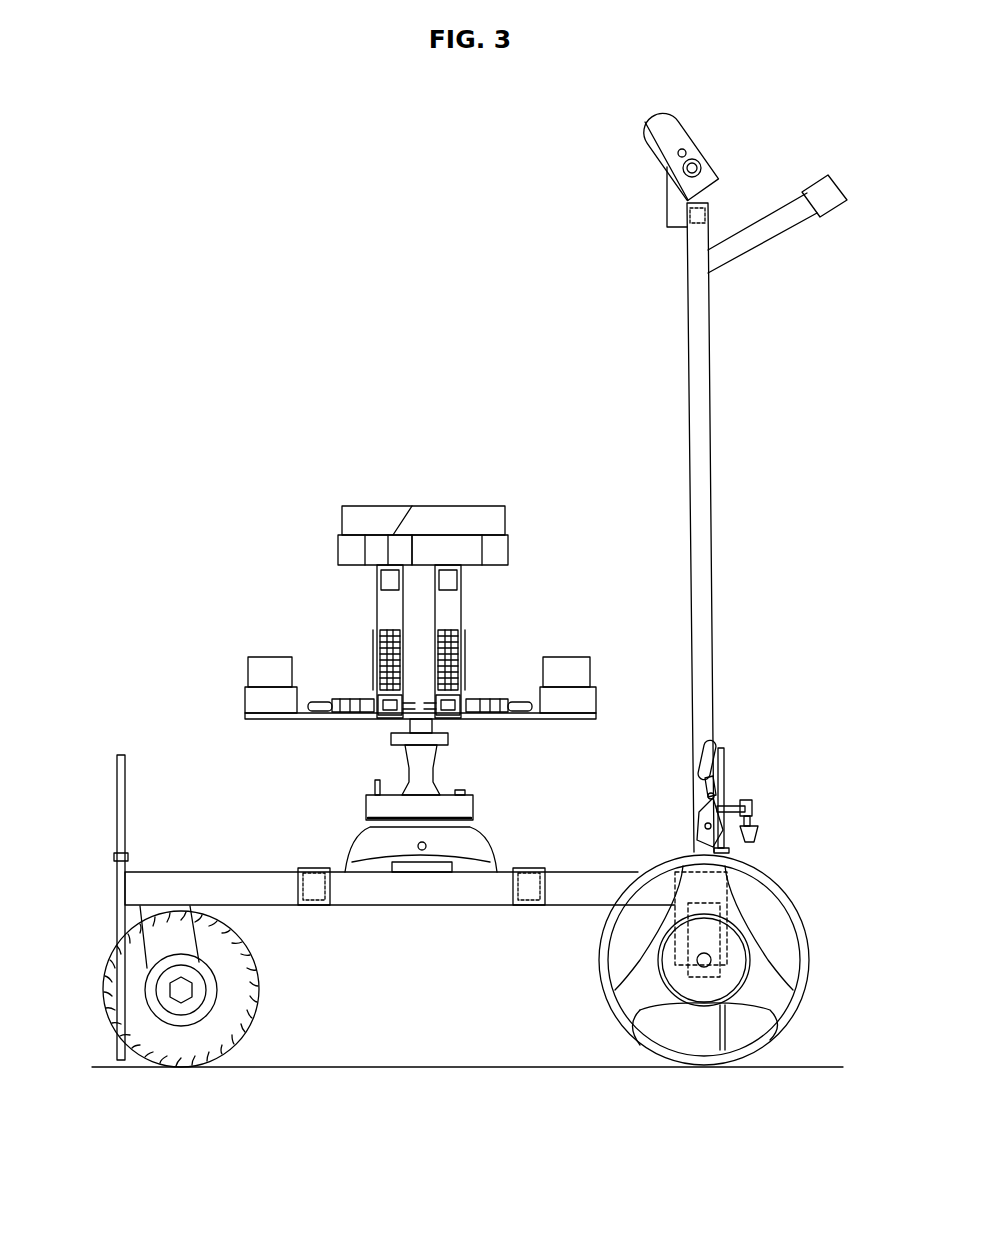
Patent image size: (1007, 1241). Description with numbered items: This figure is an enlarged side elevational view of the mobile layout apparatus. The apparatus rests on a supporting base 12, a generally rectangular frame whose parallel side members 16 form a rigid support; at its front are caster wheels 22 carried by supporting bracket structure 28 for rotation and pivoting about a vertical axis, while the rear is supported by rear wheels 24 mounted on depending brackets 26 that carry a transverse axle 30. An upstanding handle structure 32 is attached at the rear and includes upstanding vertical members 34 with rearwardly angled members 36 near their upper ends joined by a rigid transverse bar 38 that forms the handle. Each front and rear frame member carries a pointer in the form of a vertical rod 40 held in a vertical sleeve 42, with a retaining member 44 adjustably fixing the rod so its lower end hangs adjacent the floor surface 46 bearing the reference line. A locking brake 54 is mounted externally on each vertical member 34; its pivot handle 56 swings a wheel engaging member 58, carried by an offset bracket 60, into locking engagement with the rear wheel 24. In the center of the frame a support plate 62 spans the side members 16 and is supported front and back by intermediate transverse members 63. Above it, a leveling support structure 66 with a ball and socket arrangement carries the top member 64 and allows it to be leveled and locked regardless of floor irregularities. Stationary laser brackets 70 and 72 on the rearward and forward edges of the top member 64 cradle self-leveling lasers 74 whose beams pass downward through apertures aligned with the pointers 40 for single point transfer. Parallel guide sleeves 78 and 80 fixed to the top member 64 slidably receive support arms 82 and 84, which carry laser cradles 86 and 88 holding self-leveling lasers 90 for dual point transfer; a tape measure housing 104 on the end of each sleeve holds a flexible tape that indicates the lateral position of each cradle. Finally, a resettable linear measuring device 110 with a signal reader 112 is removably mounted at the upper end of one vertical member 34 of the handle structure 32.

The supporting base 12 is at (400, 898).
The side members 16 is at (460, 908).
The caster wheels 22 is at (213, 986).
The rear wheels 24 is at (689, 960).
The depending brackets 26 is at (695, 925).
The supporting bracket structure 28 is at (172, 945).
The axle 30 is at (711, 957).
The handle structure 32 is at (741, 445).
The upstanding vertical members 34 is at (705, 440).
The rearwardly angled members 36 is at (777, 214).
The transverse bar 38 is at (810, 185).
The vertical rod 40 is at (459, 902).
The vertical sleeve 42 is at (126, 892).
The retaining member 44 is at (128, 857).
The floor surface 46 is at (381, 1064).
The locking brake 54 is at (722, 802).
The pivot handle 56 is at (703, 753).
The wheel engaging member 58 is at (758, 836).
The offset bracket 60 is at (772, 819).
The support plate 62 is at (510, 868).
The intermediate transverse members 63 is at (525, 908).
The top member 64 is at (420, 688).
The leveling support structure 66 is at (455, 765).
The stationary laser bracket 70 is at (592, 700).
The stationary laser bracket 72 is at (248, 704).
The self-leveling laser 74 is at (262, 664).
The guide sleeve 78 is at (383, 674).
The guide sleeve 80 is at (457, 674).
The support arm 82 is at (388, 716).
The support arm 84 is at (452, 716).
The laser cradle 86 is at (505, 552).
The laser cradle 88 is at (340, 552).
The self-leveling laser 90 is at (422, 500).
The tape measure housing 104 is at (378, 648).
The resettable linear measuring device 110 is at (706, 132).
The signal reader 112 is at (680, 130).